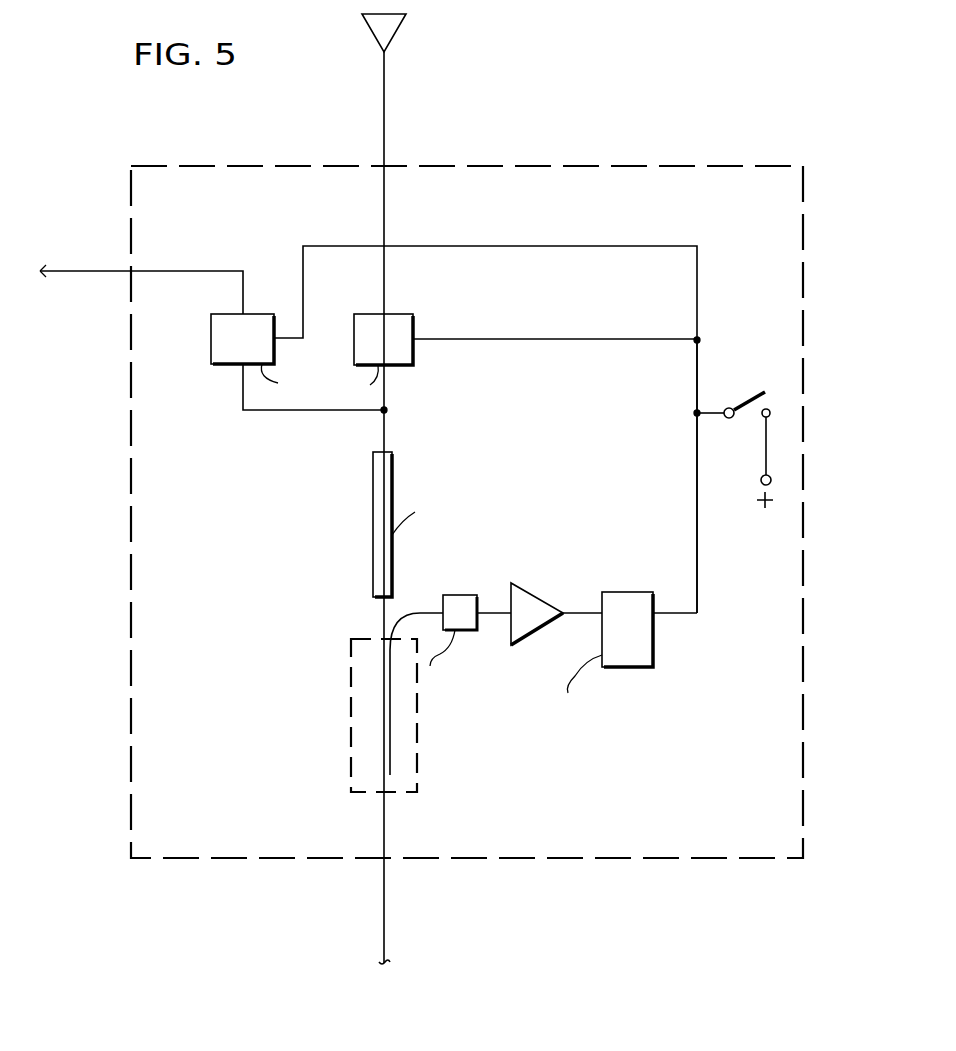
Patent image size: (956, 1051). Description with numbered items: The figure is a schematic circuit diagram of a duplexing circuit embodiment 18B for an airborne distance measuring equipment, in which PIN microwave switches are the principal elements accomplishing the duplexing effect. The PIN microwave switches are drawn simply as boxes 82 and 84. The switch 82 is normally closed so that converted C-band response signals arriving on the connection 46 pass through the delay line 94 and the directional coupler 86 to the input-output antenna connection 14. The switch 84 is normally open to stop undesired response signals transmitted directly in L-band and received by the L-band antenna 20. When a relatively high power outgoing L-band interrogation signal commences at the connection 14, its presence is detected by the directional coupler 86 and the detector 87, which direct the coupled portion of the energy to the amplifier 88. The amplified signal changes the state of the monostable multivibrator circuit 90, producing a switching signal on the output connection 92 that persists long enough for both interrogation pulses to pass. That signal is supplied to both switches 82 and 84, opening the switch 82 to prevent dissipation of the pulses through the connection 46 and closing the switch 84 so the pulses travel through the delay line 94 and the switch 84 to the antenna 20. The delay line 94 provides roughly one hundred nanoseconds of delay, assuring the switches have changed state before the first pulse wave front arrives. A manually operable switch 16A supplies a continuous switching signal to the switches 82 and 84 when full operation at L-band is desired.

The input-output antenna connection 14 is at (384, 912).
The manually operable switch 16A is at (745, 405).
The duplexing circuit embodiment 18B is at (552, 165).
The L-band antenna 20 is at (393, 35).
The connection 46 is at (90, 270).
The PIN microwave switch 82 is at (211, 338).
The PIN microwave switch 84 is at (413, 355).
The directional coupler 86 is at (417, 702).
The detector 87 is at (462, 595).
The amplifier 88 is at (530, 585).
The monostable multivibrator circuit 90 is at (623, 592).
The output connection 92 is at (697, 468).
The delay line 94 is at (373, 515).